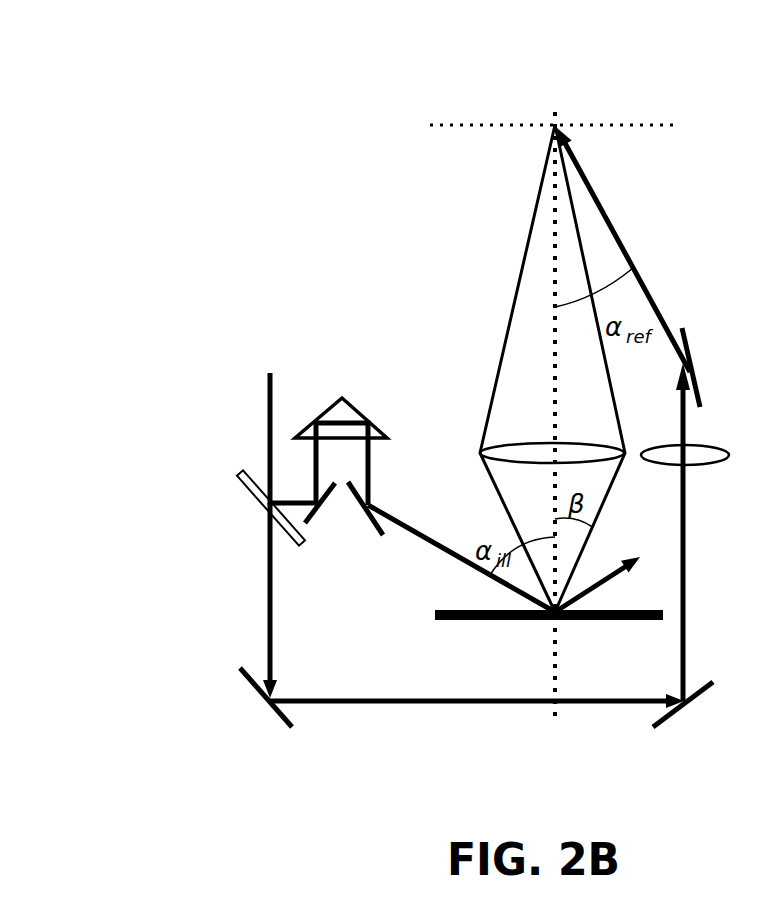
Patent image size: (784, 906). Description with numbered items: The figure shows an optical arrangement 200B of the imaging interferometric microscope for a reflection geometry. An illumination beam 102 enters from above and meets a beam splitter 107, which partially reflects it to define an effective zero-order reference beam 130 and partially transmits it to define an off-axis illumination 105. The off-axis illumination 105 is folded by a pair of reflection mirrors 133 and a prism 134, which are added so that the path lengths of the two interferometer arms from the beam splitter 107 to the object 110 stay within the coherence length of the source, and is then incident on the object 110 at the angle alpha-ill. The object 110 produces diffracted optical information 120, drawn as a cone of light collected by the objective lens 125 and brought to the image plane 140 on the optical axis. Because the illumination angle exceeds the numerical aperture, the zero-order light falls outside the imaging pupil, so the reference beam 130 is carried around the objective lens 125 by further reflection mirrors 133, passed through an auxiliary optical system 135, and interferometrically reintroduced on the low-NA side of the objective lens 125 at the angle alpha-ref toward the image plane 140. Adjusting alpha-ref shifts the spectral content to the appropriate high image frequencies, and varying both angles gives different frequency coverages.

The optical arrangement 200B is at (596, 76).
The illumination beam 102 is at (260, 423).
The off-axis illumination 105 is at (433, 540).
The beam splitter 107 is at (253, 507).
The object 110 is at (530, 588).
The diffracted optical information 120 is at (611, 487).
The objective lens 125 is at (526, 452).
The effective 0-order reference beam 130 is at (449, 418).
The reflection mirror 133 is at (473, 532).
The prism 134 is at (328, 436).
The auxiliary optical system 135 is at (705, 455).
The image plane 140 is at (580, 125).